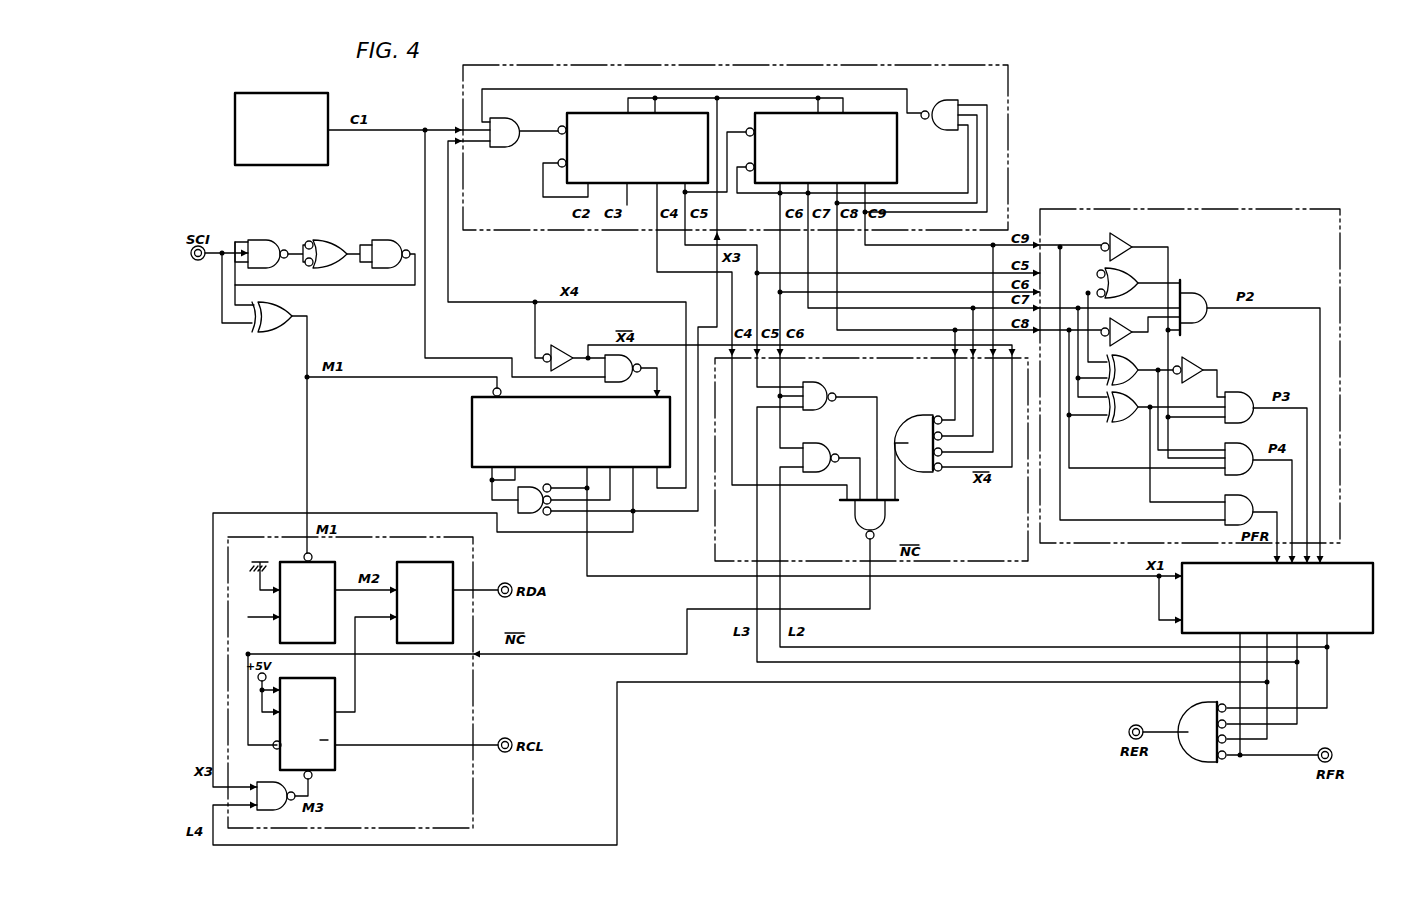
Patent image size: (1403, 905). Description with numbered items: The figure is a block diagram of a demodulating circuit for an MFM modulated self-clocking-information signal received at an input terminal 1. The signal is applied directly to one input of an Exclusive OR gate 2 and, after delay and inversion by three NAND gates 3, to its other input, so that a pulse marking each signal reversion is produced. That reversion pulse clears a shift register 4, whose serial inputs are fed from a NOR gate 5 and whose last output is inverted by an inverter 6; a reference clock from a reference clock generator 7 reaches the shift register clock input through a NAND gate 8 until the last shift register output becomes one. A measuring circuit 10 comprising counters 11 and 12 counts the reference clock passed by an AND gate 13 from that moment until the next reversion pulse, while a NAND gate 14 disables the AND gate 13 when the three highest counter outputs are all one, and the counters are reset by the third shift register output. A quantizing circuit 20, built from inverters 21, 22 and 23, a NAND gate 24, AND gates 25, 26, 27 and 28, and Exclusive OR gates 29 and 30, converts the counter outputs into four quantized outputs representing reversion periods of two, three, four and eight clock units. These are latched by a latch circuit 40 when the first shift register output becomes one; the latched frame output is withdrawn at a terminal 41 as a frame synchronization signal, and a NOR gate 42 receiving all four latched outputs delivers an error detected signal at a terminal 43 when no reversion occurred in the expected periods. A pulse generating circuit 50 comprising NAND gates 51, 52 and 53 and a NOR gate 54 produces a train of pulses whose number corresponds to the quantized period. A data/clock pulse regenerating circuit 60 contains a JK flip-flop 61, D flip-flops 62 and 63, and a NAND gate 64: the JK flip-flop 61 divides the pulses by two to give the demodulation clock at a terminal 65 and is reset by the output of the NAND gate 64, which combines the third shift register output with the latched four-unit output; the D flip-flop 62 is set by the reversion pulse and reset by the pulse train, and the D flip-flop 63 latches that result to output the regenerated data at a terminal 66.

The input terminal 1 is at (200, 261).
The Exclusive OR gate 2 is at (272, 332).
The NAND gates 3 is at (262, 240).
The shift register 4 is at (472, 440).
The NOR gate 5 is at (521, 512).
The inverter 6 is at (561, 345).
The reference clock generator 7 is at (305, 165).
The NAND gate 8 is at (630, 356).
The measuring circuit 10 is at (1008, 100).
The counter 11 is at (583, 113).
The counter 12 is at (872, 118).
The AND gate 13 is at (505, 147).
The NAND gate 14 is at (942, 130).
The quantizing circuit 20 is at (1285, 208).
The inverter 21 is at (1122, 240).
The inverter 22 is at (1122, 340).
The inverter 23 is at (1190, 362).
The NAND gate 24 is at (1130, 272).
The AND gate 25 is at (1195, 292).
The AND gate 26 is at (1240, 392).
The AND gate 27 is at (1243, 443).
The AND gate 28 is at (1243, 495).
The Exclusive OR gate 29 is at (1128, 380).
The Exclusive OR gate 30 is at (1125, 422).
The latch circuit 40 is at (1350, 633).
The terminal 41 is at (1327, 748).
The NOR gate 42 is at (1197, 752).
The terminal 43 is at (1132, 725).
The pulse generating circuit 50 is at (717, 527).
The NAND gate 51 is at (822, 384).
The NAND gate 52 is at (822, 445).
The NAND gate 53 is at (856, 523).
The NOR gate 54 is at (912, 426).
The data/clock pulse regenerating circuit 60 is at (473, 557).
The JK flip-flop 61 is at (335, 760).
The D flip-flop 62 is at (330, 562).
The D flip-flop 63 is at (404, 562).
The NAND gate 64 is at (268, 810).
The terminal 65 is at (507, 738).
The terminal 66 is at (509, 583).